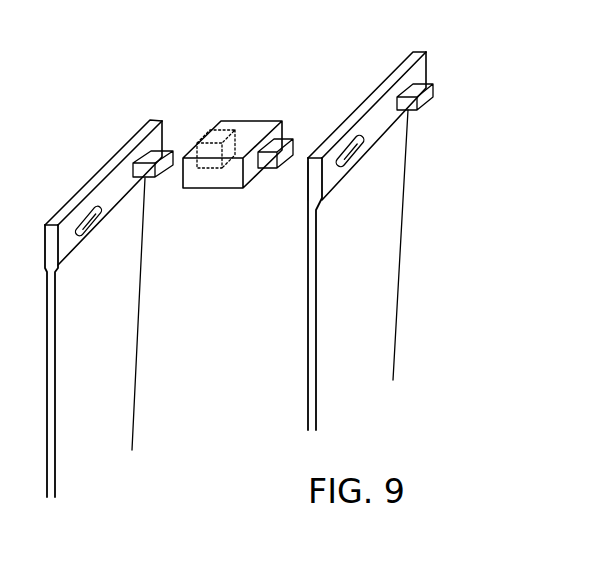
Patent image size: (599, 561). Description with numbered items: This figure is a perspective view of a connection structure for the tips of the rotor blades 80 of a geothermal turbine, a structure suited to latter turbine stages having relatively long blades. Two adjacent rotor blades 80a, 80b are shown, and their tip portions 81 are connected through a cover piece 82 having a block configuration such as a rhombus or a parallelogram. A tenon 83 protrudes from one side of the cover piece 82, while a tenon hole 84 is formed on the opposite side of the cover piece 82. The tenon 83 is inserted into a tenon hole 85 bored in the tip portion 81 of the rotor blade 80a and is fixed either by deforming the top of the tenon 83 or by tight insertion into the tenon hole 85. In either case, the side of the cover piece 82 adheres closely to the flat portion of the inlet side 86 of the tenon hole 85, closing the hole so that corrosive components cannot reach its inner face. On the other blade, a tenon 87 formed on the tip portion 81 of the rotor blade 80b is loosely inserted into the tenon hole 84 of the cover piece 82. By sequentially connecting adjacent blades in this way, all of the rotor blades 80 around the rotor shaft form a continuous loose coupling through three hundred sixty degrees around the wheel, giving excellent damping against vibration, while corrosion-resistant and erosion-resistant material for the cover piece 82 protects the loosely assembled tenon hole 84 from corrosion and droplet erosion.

The rotor blades 80 is at (282, 426).
The rotor blade 80a is at (307, 387).
The rotor blade 80b is at (127, 386).
The tip portion 81 is at (85, 190).
The cover piece 82 is at (244, 114).
The tenon 83 is at (241, 122).
The tenon hole 84 is at (199, 150).
The tenon hole 85 is at (93, 226).
The inlet side 86 is at (307, 178).
The tenon 87 is at (157, 151).